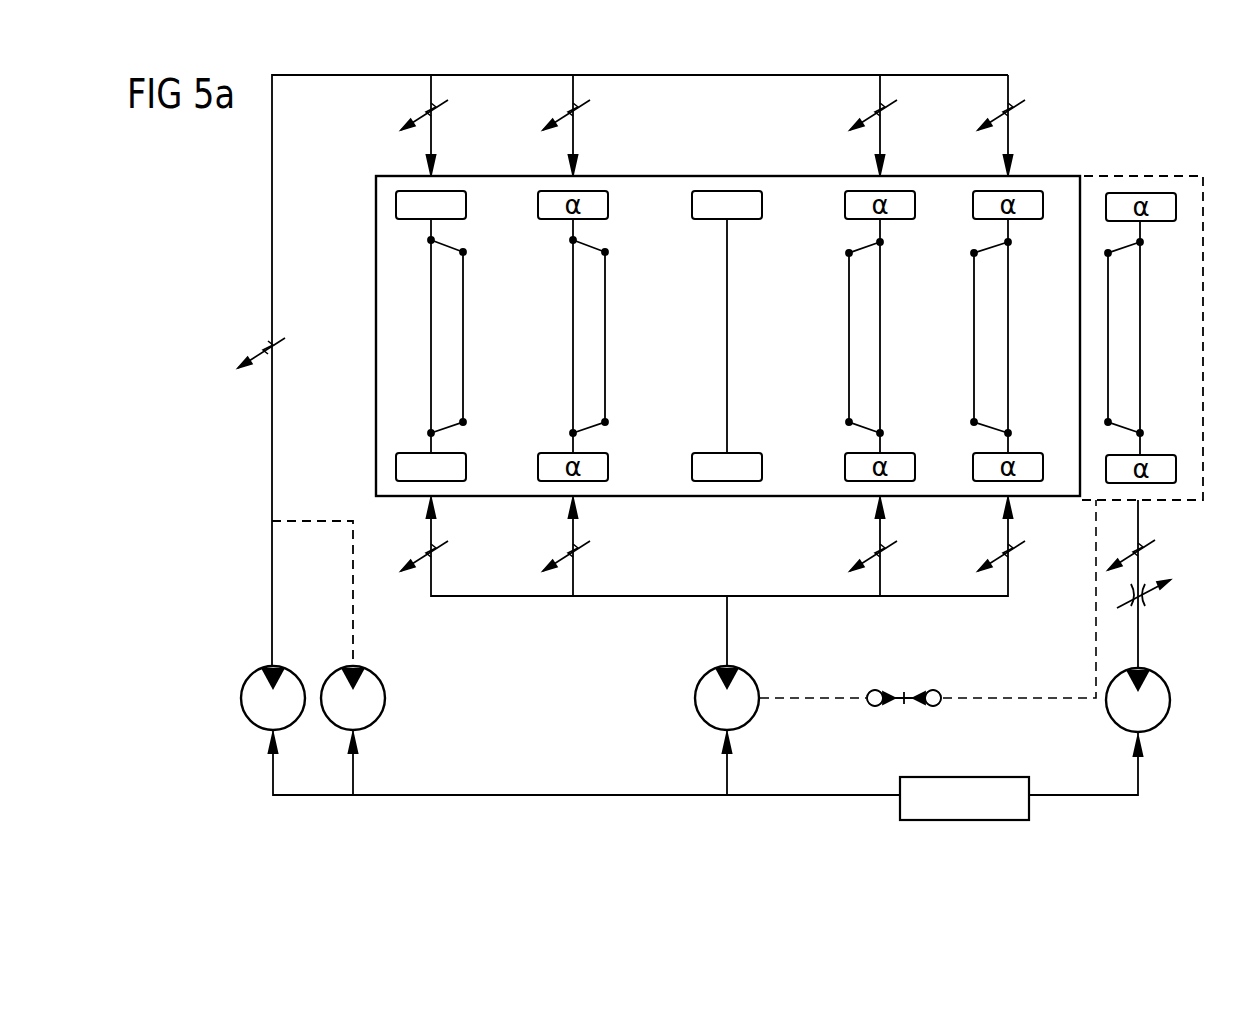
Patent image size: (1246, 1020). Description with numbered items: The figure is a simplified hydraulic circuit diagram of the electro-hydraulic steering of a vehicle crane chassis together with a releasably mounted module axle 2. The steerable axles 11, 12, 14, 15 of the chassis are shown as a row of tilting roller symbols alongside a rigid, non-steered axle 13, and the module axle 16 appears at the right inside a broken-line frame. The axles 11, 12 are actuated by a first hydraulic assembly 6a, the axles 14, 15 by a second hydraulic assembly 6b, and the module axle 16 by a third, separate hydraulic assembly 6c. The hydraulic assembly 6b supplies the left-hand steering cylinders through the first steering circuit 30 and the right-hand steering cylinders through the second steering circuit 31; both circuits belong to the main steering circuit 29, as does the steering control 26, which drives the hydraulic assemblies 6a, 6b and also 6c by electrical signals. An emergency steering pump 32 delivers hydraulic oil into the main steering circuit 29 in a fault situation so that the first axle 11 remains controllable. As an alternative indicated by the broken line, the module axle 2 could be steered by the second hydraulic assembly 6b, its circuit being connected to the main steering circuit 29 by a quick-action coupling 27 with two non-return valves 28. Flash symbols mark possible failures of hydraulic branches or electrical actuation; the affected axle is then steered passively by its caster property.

The module axle 2 is at (1150, 178).
The first hydraulic assembly 6a is at (252, 673).
The second hydraulic assembly 6b is at (695, 698).
The third separate hydraulic assembly 6c is at (1171, 684).
The first axle 11 is at (431, 345).
The axle 12 is at (573, 345).
The rigid roller 13 is at (727, 345).
The axle 14 is at (880, 352).
The axle 15 is at (1008, 352).
The module axle 16 is at (1140, 352).
The steering control 26 is at (965, 777).
The quick-action coupling 27 is at (920, 684).
The non-return valves 28 is at (873, 706).
The main steering circuit 29 is at (562, 714).
The first steering circuit 30 is at (662, 596).
The second steering circuit 31 is at (272, 216).
The emergency steering pump 32 is at (333, 673).